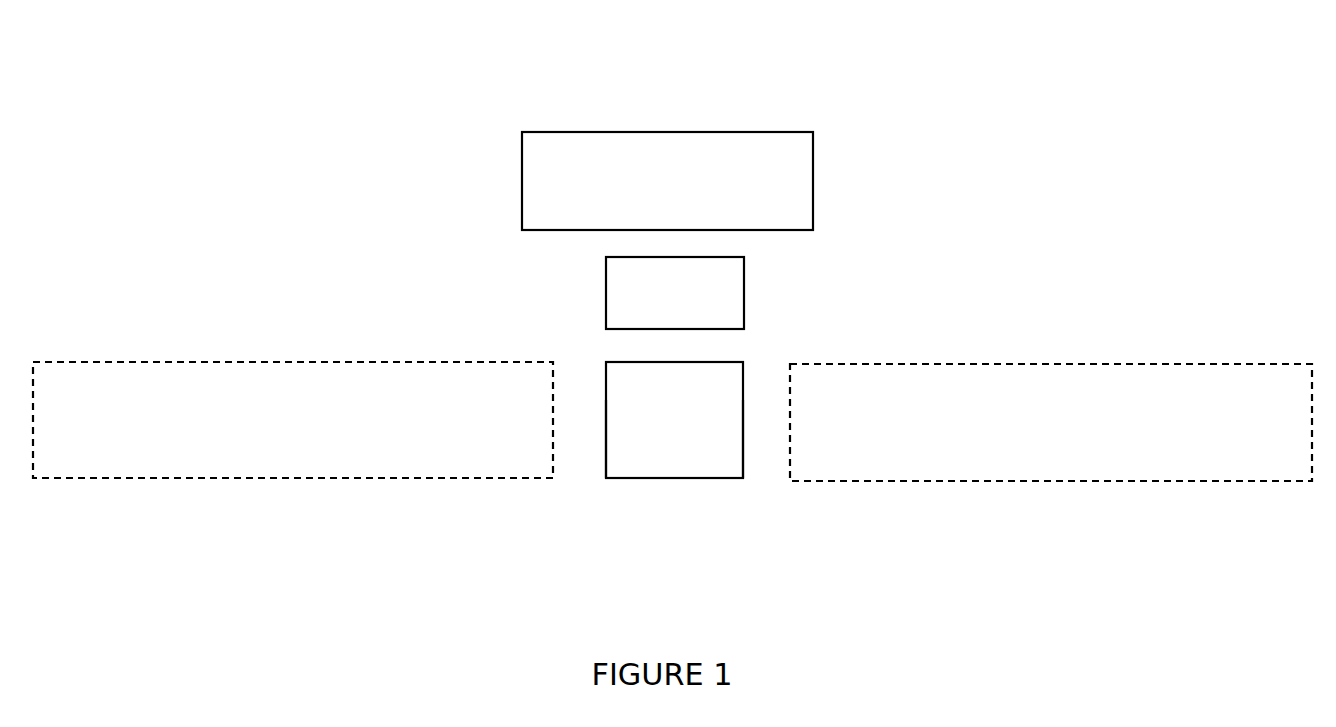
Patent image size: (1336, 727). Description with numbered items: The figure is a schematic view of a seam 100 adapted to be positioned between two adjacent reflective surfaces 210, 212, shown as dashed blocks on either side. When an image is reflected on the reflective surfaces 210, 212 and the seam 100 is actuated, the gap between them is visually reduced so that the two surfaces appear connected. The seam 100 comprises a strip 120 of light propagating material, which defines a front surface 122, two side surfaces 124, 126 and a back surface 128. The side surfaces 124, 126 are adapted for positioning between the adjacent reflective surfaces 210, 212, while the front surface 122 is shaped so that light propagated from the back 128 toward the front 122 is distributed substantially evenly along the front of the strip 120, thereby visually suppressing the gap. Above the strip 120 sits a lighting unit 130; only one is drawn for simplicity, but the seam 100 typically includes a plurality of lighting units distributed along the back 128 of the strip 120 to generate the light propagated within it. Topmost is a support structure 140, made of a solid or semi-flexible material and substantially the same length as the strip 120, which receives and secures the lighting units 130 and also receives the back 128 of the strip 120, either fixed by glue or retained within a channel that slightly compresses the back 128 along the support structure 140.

The seam 100 is at (908, 181).
The strip of light propagating material 120 is at (650, 434).
The front surface 122 is at (683, 478).
The side surface 124 is at (606, 440).
The side surface 126 is at (746, 440).
The back surface 128 is at (720, 362).
The lighting unit 130 is at (650, 307).
The support structure 140 is at (644, 194).
The reflective surface 210 is at (269, 434).
The reflective surface 212 is at (1027, 437).